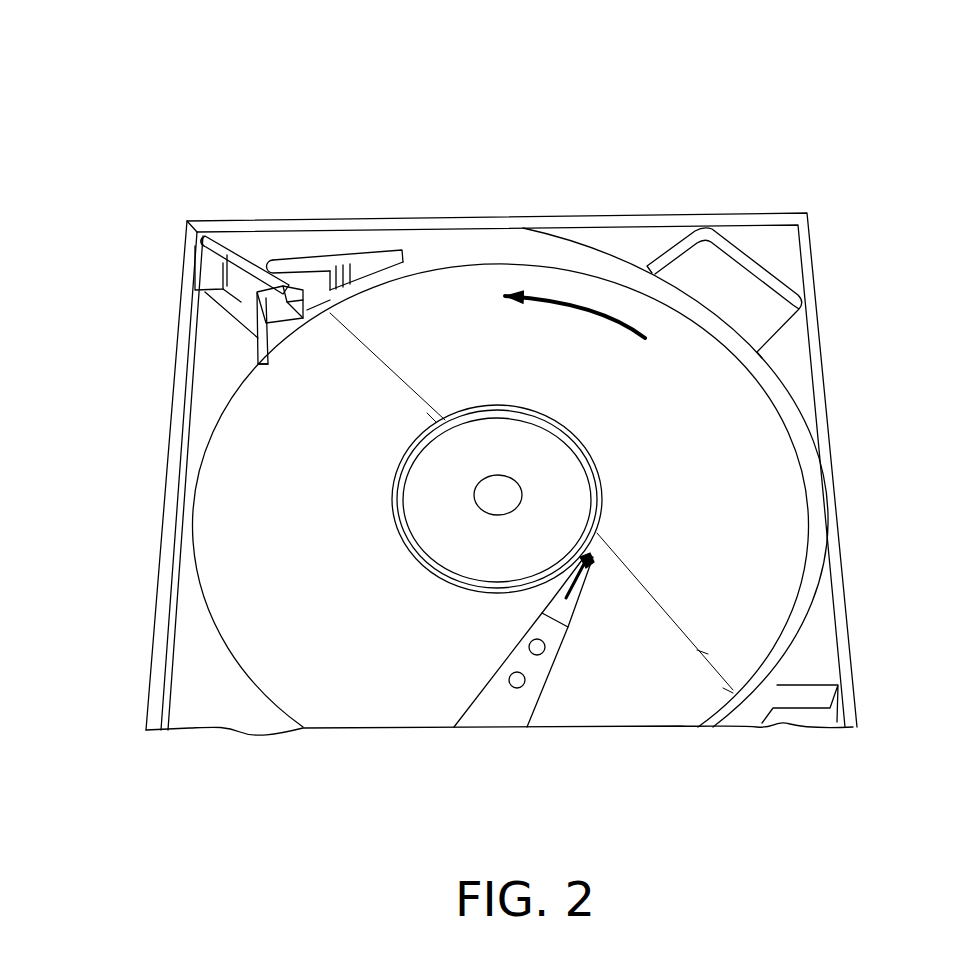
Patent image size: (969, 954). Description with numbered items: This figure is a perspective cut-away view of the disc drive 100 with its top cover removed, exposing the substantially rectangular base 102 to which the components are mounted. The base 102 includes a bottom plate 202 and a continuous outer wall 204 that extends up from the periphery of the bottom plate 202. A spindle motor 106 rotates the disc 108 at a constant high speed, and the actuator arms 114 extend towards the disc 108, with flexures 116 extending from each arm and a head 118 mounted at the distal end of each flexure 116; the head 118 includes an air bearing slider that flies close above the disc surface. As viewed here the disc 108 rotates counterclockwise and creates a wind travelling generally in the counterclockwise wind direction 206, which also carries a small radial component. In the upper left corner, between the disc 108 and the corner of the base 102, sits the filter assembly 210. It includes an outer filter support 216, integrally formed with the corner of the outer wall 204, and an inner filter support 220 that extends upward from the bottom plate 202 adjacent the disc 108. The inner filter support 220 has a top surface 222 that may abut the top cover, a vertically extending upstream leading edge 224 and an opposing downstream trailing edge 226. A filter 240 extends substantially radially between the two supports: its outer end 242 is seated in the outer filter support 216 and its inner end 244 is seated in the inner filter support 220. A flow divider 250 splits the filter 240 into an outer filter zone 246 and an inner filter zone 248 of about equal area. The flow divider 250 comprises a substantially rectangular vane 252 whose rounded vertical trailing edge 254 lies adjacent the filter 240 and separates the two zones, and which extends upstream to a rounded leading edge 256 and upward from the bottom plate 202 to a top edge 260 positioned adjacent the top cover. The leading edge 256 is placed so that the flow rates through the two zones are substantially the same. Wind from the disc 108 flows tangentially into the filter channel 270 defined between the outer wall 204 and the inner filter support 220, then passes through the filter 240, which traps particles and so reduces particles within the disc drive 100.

The disc drive 100 is at (390, 90).
The base 102 is at (209, 772).
The spindle motor 106 is at (523, 457).
The disc 108 is at (388, 690).
The actuator arm 114 is at (512, 708).
The flexure 116 is at (570, 608).
The head 118 is at (585, 570).
The bottom plate 202 is at (203, 661).
The outer wall 204 is at (165, 563).
The wind direction 206 is at (560, 304).
The filter assembly 210 is at (237, 186).
The outer filter support 216 is at (172, 226).
The inner filter support 220 is at (260, 378).
The top surface 222 is at (270, 305).
The leading edge 224 is at (300, 291).
The trailing edge 226 is at (263, 353).
The filter 240 is at (212, 373).
The outer end 242 is at (207, 245).
The inner end 244 is at (272, 298).
The outer filter zone 246 is at (210, 290).
The inner filter zone 248 is at (248, 308).
The flow divider 250 is at (438, 168).
The vane 252 is at (330, 281).
The trailing edge 254 is at (272, 256).
The leading edge 256 is at (401, 262).
The top edge 260 is at (334, 262).
The filter channel 270 is at (238, 245).